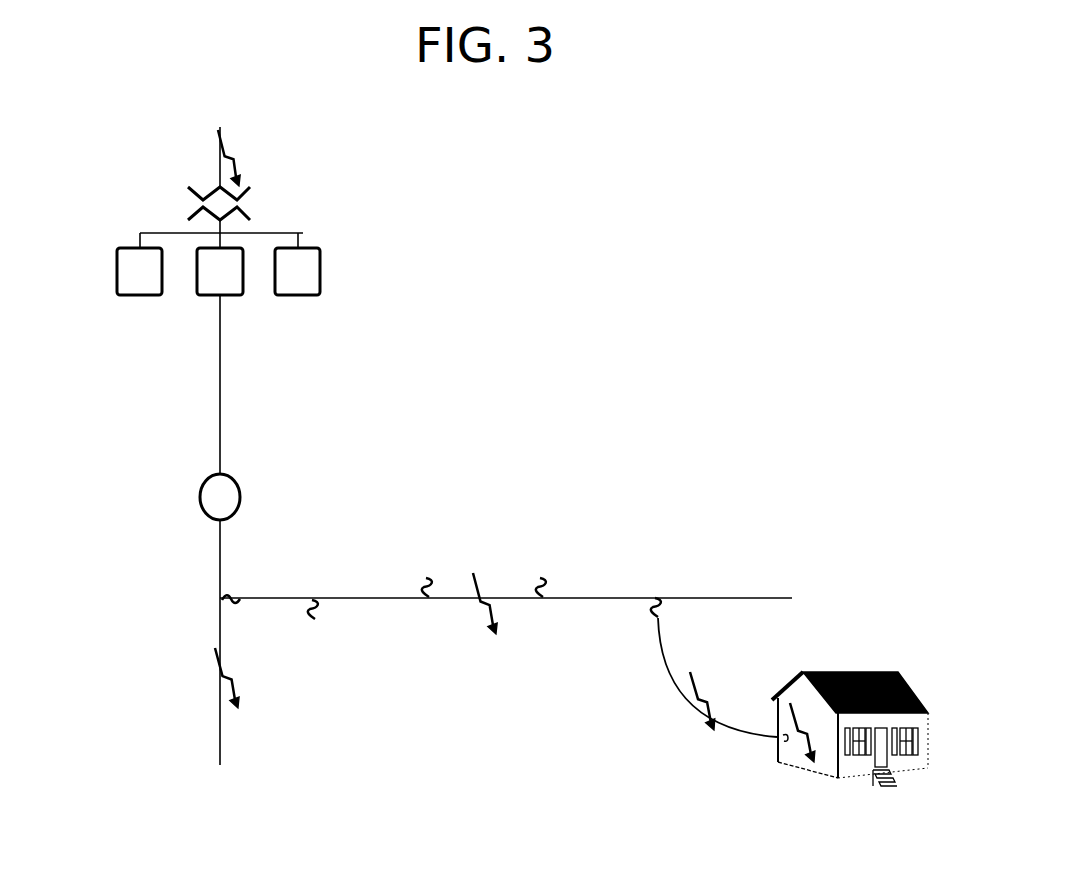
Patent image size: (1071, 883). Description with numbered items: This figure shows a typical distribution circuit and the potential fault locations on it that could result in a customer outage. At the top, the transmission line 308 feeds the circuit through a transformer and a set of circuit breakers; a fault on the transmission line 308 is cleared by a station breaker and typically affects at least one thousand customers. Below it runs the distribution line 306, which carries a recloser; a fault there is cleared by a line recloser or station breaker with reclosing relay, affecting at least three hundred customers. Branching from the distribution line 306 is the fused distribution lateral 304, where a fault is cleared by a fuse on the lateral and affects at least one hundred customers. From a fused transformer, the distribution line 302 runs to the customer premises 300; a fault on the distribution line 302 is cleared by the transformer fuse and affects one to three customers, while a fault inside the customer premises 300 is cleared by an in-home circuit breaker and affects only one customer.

The customer premises 300 is at (904, 675).
The distribution line 302 is at (669, 670).
The distribution lateral 304 is at (410, 598).
The distribution line 306 is at (233, 530).
The transmission line 308 is at (275, 211).